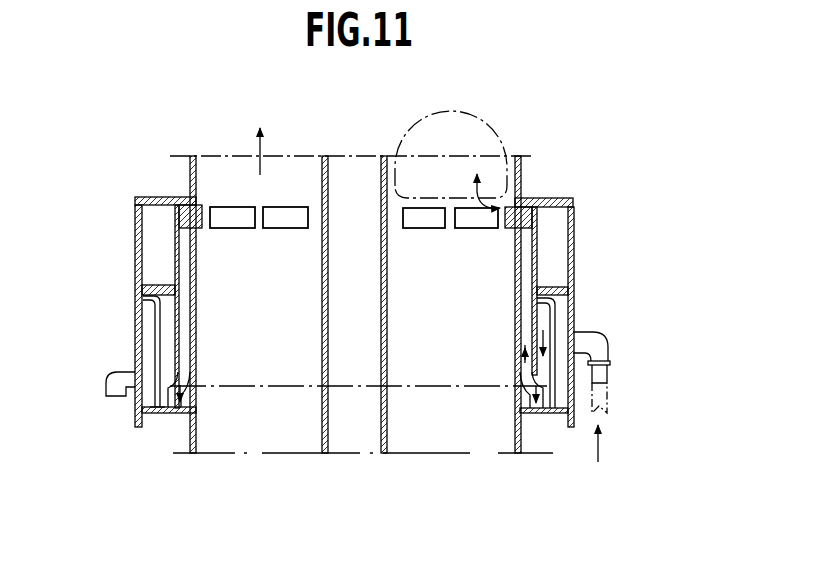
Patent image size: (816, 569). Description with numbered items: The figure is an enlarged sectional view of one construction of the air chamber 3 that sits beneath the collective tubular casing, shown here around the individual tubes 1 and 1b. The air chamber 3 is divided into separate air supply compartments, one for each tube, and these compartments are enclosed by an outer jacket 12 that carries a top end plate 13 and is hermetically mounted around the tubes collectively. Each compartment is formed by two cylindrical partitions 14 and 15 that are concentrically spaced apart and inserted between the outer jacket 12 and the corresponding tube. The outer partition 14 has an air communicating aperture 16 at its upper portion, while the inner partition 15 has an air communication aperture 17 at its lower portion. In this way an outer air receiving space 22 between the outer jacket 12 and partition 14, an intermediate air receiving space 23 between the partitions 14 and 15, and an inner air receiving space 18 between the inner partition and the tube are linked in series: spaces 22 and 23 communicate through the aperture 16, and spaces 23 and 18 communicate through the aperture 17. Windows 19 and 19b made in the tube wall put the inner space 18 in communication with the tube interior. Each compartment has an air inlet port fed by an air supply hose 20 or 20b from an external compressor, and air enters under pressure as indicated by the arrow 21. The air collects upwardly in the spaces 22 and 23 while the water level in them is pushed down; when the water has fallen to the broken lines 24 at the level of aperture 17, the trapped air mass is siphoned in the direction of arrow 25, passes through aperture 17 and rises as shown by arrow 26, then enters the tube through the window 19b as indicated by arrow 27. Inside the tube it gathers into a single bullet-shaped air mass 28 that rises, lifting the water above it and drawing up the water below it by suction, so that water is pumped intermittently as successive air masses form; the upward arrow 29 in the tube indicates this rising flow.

The tube 1 is at (190, 175).
The tube 1b is at (518, 170).
The air chamber 3 is at (131, 285).
The outer jacket 12 is at (575, 273).
The top end plate 13 is at (145, 198).
The cylindrical partition 14 is at (140, 416).
The cylindrical partition 15 is at (160, 410).
The air communicating aperture 16 is at (160, 300).
The air communication aperture 17 is at (176, 410).
The air receiving space 18 is at (526, 268).
The window 19 is at (238, 215).
The window 19b is at (517, 217).
The air supply hose 20 is at (120, 385).
The air supply hose 20b is at (608, 398).
The arrow 21 is at (600, 447).
The air receiving space 22 is at (148, 340).
The air receiving space 23 is at (168, 345).
The broken lines 24 is at (292, 386).
The arrow 25 is at (594, 345).
The arrow 26 is at (517, 388).
The arrow 27 is at (503, 207).
The bullet-shaped air mass 28 is at (485, 127).
The flow arrow 29 is at (258, 147).